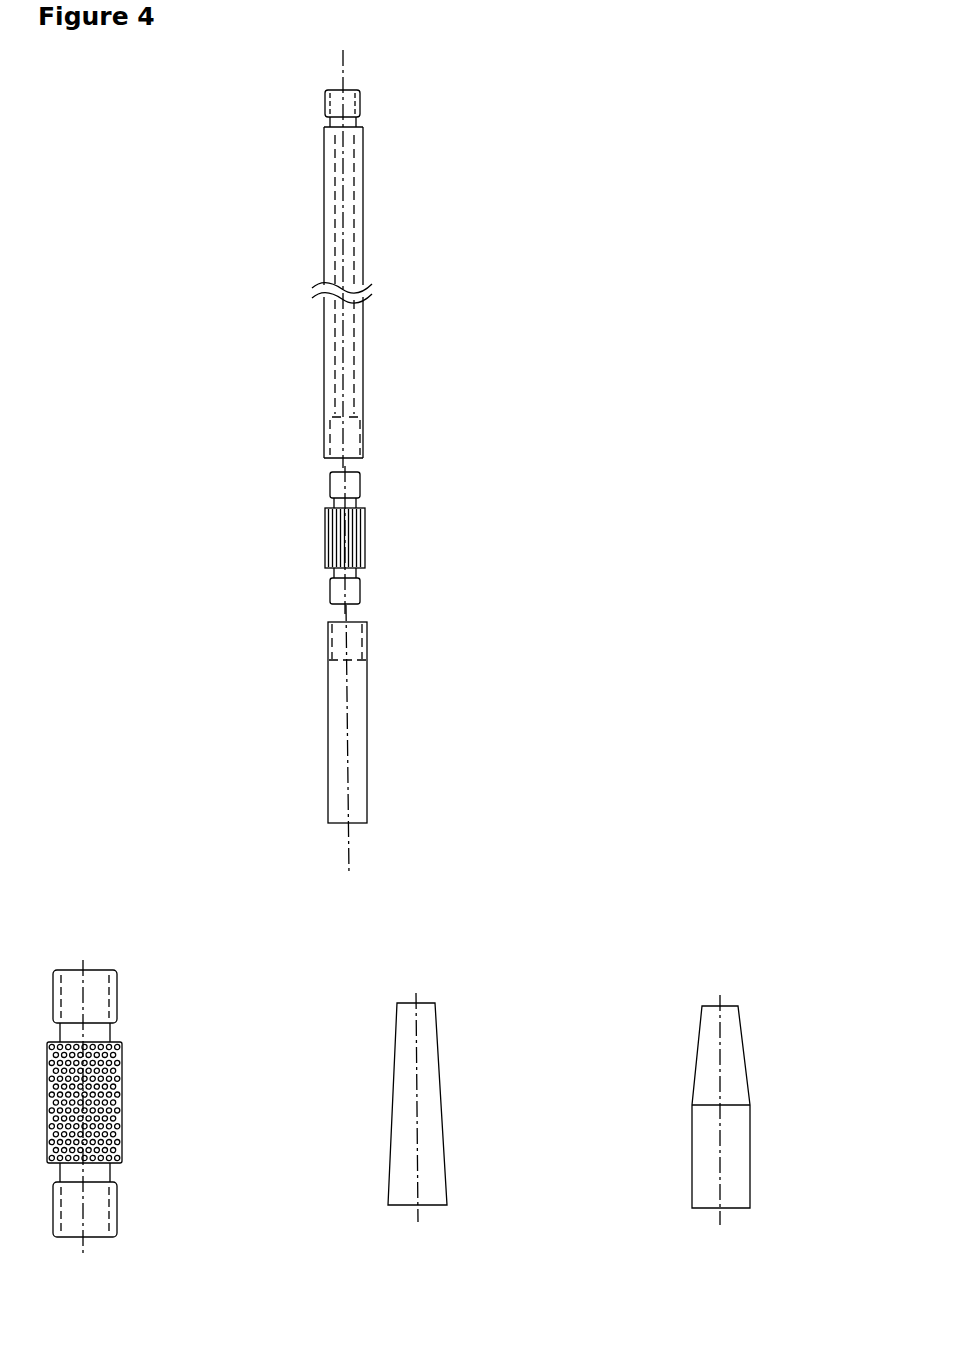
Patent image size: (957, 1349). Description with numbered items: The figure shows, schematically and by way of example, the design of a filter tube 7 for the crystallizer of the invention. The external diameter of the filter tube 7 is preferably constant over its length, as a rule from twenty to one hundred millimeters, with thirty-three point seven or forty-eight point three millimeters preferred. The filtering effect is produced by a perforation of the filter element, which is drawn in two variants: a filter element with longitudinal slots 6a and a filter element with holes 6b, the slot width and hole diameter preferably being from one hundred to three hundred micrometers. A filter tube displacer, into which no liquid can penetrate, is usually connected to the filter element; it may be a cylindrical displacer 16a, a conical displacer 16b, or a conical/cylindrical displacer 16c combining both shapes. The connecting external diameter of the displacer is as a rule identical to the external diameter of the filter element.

The filter tube 7 is at (365, 233).
The filter element with longitudinal slots 6a is at (365, 540).
The cylindrical displacer 16a is at (367, 768).
The filter element with holes 6b is at (127, 1068).
The conical displacer 16b is at (444, 1083).
The conical/cylindrical displacer 16c is at (753, 1087).